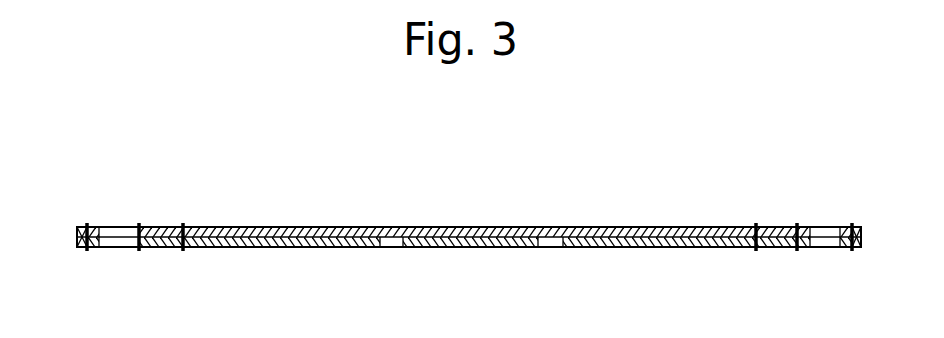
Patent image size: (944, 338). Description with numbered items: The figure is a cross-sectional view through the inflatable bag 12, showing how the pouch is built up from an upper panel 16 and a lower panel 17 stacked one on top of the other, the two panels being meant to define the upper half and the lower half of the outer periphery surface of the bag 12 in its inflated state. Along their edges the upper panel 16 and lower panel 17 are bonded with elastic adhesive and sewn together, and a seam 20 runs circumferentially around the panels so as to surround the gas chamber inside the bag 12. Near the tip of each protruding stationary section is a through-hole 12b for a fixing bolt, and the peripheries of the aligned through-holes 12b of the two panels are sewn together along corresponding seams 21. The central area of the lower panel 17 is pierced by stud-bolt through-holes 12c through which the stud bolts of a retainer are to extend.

The bag 12 is at (572, 210).
The through-hole 12b is at (115, 227).
The stud-bolt through-hole 12c is at (393, 247).
The upper panel 16 is at (250, 227).
The lower panel 17 is at (223, 247).
The seam 20 is at (183, 227).
The seam 21 is at (87, 227).